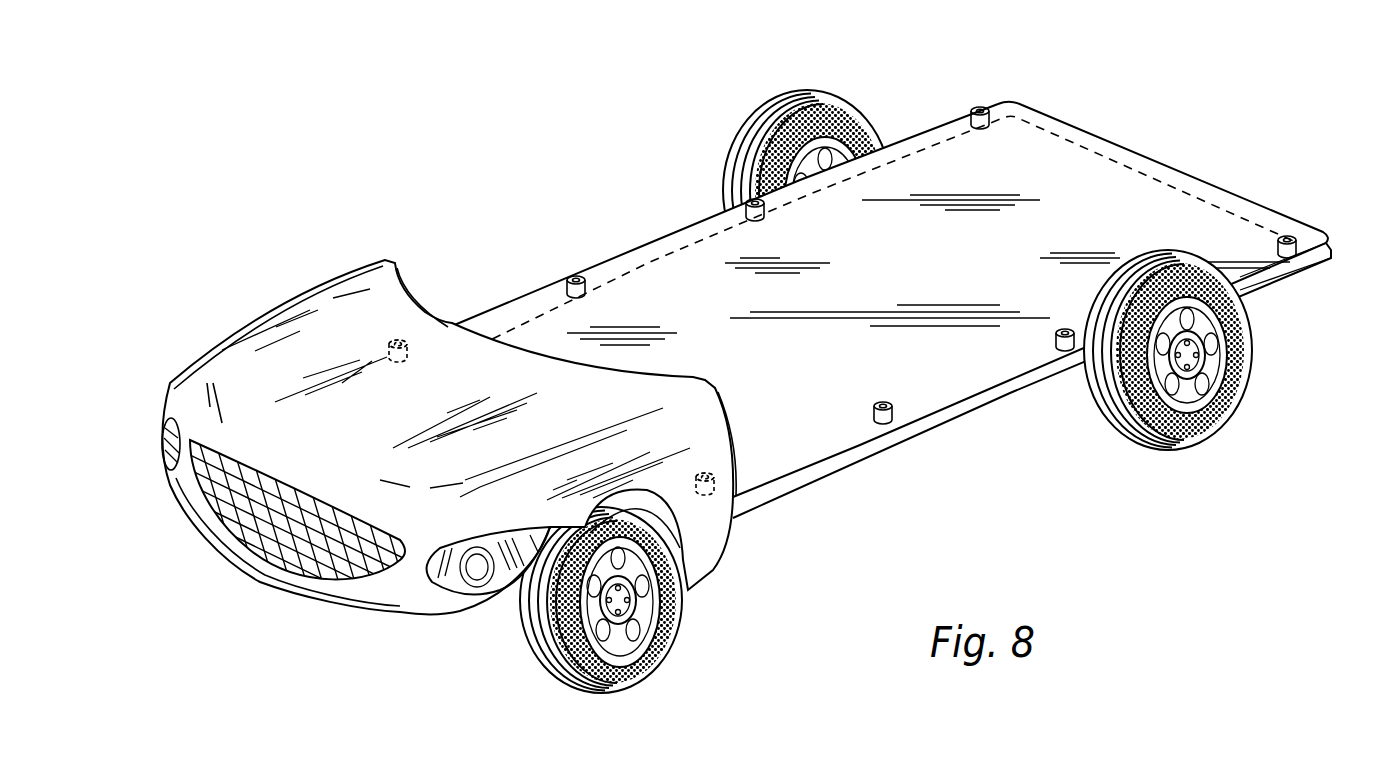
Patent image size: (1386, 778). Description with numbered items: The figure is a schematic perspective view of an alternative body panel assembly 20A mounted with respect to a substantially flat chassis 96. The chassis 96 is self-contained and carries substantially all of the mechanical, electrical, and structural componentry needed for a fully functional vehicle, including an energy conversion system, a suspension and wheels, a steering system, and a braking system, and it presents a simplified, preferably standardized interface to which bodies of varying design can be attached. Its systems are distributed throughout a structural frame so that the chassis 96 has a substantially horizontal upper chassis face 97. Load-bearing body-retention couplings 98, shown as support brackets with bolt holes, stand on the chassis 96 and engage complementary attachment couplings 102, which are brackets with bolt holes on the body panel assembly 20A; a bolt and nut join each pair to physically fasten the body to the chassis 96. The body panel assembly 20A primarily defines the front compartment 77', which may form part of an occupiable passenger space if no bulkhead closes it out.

The body panel assembly 20A is at (222, 373).
The front compartment 77' is at (378, 546).
The chassis 96 is at (1297, 283).
The upper chassis face 97 is at (1098, 196).
The load-bearing body-retention couplings 98 is at (412, 356).
The complementary attachment couplings 102 is at (393, 347).